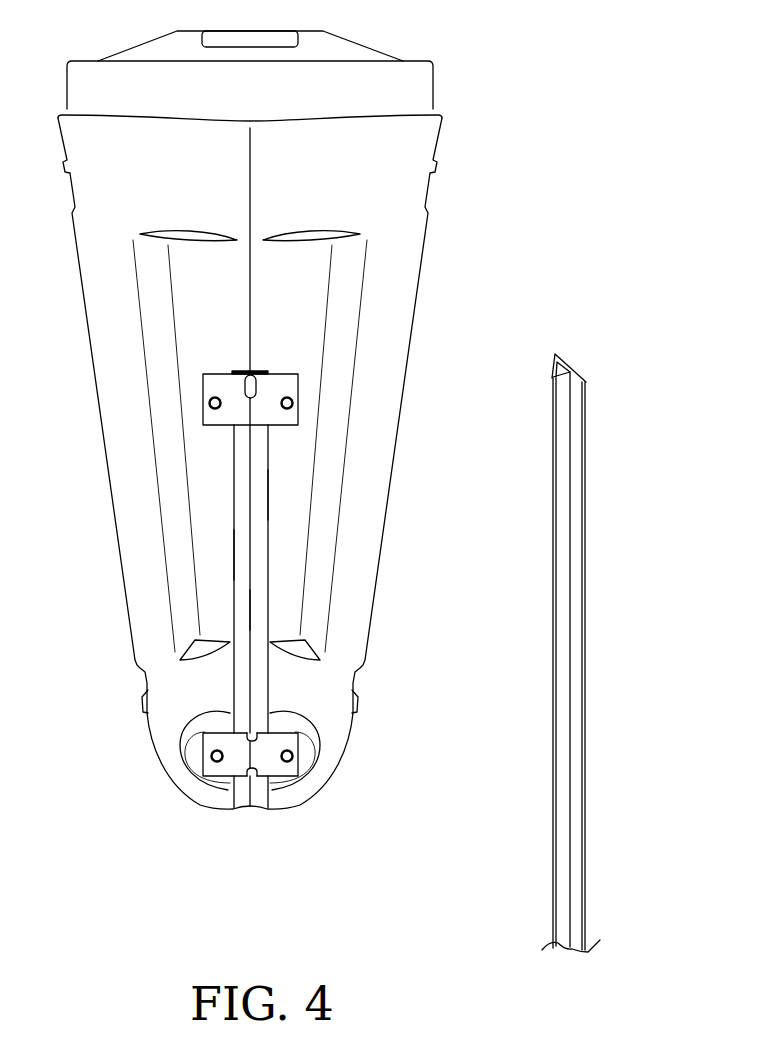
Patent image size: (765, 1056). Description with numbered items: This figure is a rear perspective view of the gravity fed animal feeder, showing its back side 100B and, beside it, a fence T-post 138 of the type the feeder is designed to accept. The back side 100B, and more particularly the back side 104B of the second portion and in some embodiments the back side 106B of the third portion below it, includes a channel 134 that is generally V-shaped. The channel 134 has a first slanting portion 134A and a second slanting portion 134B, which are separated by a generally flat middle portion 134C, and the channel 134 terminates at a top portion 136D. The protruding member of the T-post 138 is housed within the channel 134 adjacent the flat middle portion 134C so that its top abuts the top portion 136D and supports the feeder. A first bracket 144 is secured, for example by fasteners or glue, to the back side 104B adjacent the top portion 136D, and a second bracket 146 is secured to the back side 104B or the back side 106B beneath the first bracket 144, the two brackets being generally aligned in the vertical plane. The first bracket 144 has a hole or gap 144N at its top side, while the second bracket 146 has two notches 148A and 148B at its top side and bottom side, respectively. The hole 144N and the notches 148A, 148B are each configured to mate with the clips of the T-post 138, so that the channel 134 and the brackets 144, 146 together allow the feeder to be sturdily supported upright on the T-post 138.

The back side 100B is at (463, 273).
The back side of the second portion 104B is at (378, 423).
The back side of the third portion 106B is at (357, 747).
The channel 134 is at (240, 475).
The first slanting portion 134A is at (260, 512).
The second slanting portion 134B is at (242, 572).
The flat middle portion 134C is at (252, 612).
The top portion 136D is at (263, 372).
The first bracket 144 is at (210, 417).
The hole or gap 144N is at (242, 387).
The second bracket 146 is at (217, 770).
The notch 148A is at (252, 732).
The notch 148B is at (252, 780).
The T-post 138 is at (587, 580).